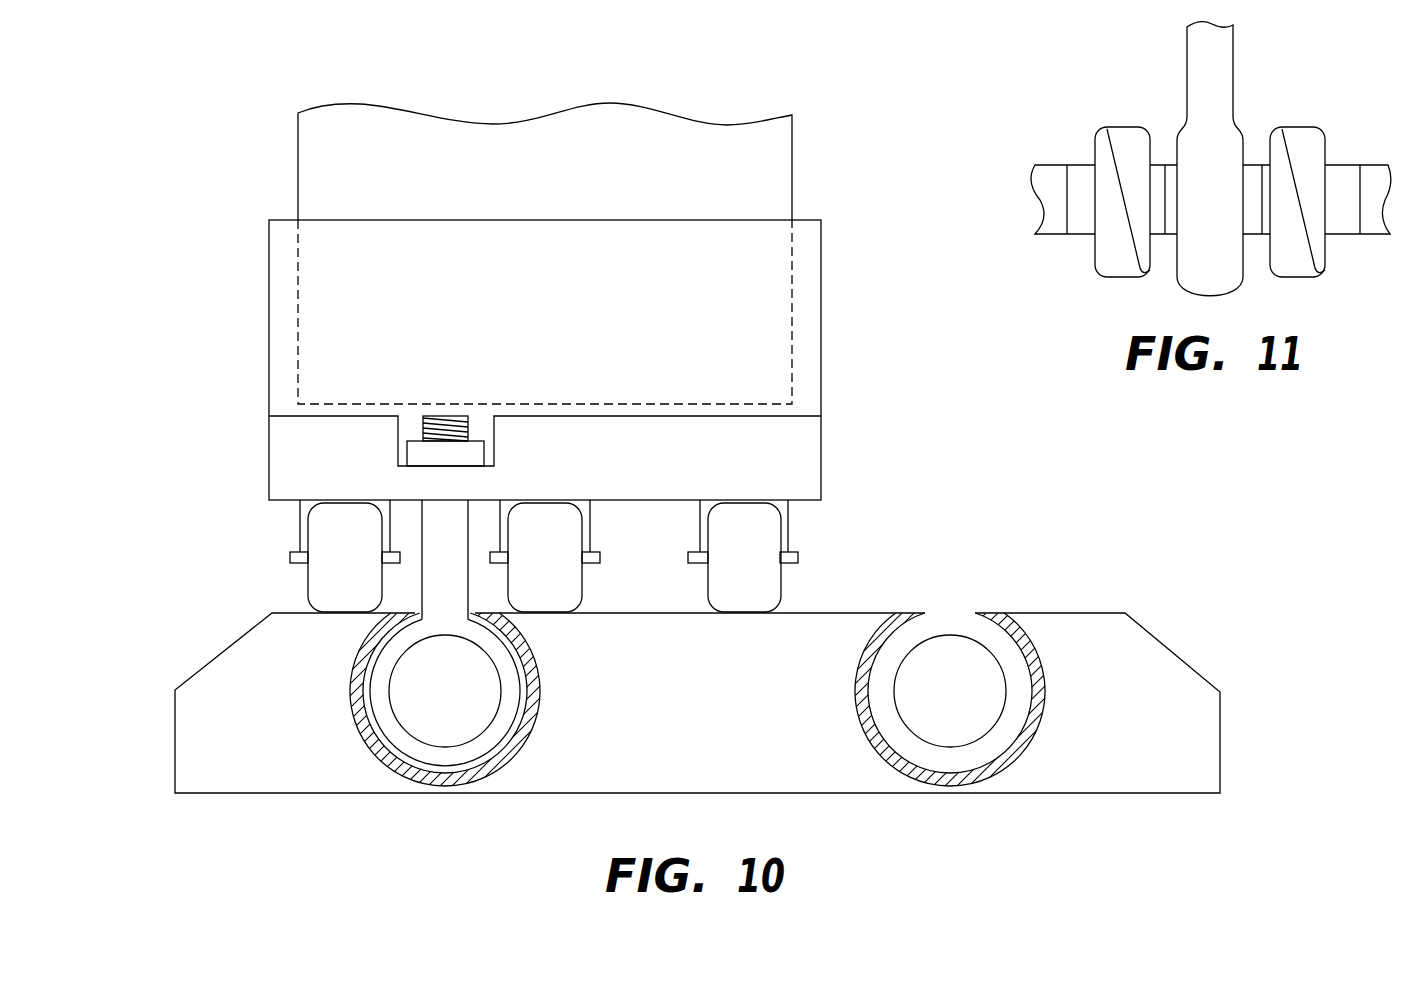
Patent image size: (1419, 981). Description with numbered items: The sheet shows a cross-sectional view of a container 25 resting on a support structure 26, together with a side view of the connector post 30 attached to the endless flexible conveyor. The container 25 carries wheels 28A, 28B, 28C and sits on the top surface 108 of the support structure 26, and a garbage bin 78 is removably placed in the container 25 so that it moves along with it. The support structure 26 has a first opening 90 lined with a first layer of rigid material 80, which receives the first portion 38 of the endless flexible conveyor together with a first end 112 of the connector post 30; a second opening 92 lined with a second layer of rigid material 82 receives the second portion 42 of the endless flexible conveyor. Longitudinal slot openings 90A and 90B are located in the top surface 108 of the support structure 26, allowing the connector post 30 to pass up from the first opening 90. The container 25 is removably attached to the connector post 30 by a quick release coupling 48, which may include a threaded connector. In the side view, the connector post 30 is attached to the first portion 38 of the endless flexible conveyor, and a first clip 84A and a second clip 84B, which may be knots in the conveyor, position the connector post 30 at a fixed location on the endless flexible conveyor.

In FIG. 10, the container 25 is at (812, 367).
In FIG. 10, the support structure 26 is at (1163, 667).
In FIG. 10, the wheel 28A is at (320, 535).
In FIG. 10, the wheel 28B is at (572, 535).
In FIG. 10, the wheel 28C is at (767, 535).
In FIG. 10, the connector post 30 is at (508, 667).
In FIG. 11, the connector post 30 is at (1223, 45).
In FIG. 10, the first portion of the endless flexible conveyor 38 is at (485, 703).
In FIG. 11, the first portion of the endless flexible conveyor 38 is at (1372, 175).
In FIG. 10, the second portion of the endless flexible conveyor 42 is at (995, 704).
In FIG. 10, the quick release coupling 48 is at (477, 455).
In FIG. 10, the garbage bin 78 is at (753, 142).
In FIG. 10, the first layer of rigid material 80 is at (360, 725).
In FIG. 10, the second layer of rigid material 82 is at (1032, 725).
In FIG. 11, the first clip 84A is at (1133, 142).
In FIG. 11, the second clip 84B is at (1310, 142).
In FIG. 10, the first opening 90 is at (368, 698).
In FIG. 10, the longitudinal slot opening 90A is at (408, 618).
In FIG. 10, the longitudinal slot opening 90B is at (970, 617).
In FIG. 10, the second opening 92 is at (1017, 667).
In FIG. 10, the top surface 108 is at (878, 613).
In FIG. 10, the first end of the connector post 112 is at (508, 717).